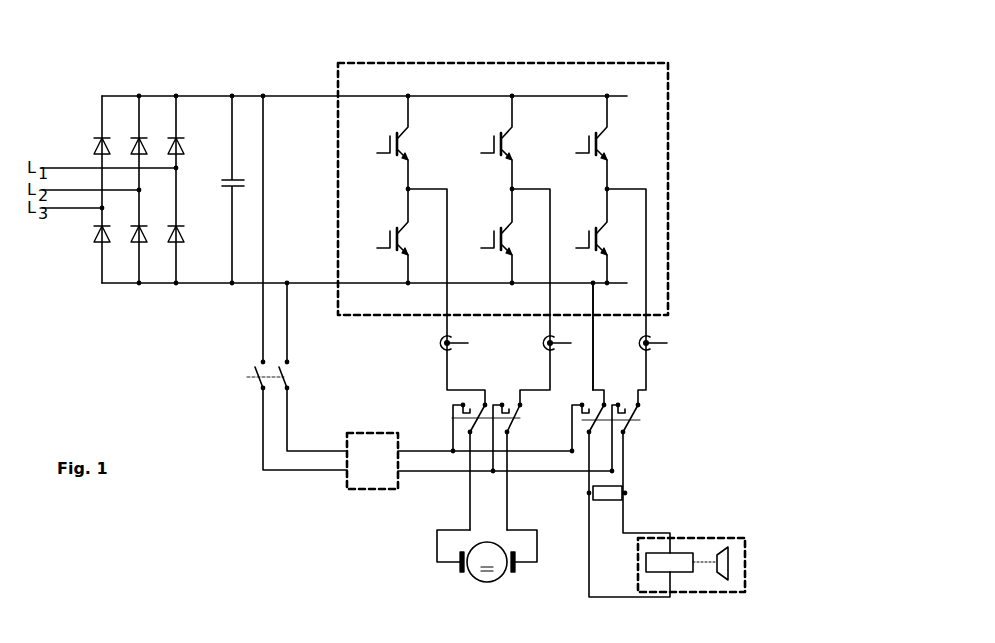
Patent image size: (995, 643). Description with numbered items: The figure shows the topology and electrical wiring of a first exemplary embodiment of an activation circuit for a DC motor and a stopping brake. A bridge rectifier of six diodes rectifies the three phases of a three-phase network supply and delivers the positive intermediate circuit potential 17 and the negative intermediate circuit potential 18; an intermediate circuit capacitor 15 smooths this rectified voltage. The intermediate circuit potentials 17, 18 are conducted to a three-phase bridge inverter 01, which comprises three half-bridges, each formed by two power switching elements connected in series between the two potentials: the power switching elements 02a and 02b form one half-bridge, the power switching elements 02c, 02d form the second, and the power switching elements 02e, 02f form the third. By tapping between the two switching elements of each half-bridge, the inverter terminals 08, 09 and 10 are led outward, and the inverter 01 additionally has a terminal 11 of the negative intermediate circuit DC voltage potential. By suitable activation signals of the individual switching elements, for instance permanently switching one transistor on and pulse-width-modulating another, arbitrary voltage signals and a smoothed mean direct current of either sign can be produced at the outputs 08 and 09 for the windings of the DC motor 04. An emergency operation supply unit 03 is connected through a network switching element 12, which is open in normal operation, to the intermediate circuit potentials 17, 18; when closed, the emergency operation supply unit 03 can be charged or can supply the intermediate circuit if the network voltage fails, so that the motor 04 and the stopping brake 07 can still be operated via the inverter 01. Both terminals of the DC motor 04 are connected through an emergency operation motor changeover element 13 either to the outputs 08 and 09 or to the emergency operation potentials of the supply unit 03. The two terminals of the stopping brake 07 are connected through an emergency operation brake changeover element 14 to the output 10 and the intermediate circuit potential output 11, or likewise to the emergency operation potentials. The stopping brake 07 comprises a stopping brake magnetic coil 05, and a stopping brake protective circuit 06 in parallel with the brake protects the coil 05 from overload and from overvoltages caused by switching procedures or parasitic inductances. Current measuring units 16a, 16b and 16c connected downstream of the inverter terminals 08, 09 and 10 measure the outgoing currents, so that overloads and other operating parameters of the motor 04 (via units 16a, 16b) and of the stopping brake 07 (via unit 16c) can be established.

The three-phase bridge inverter 01 is at (603, 62).
The power switching element 02a is at (380, 142).
The power switching element 02b is at (380, 236).
The power switching element 02c is at (486, 142).
The power switching element 02d is at (486, 236).
The power switching element 02e is at (581, 142).
The power switching element 02f is at (581, 236).
The emergency operation supply unit 03 is at (352, 489).
The DC motor 04 is at (465, 572).
The stopping brake magnetic coil 05 is at (680, 573).
The stopping brake protective circuit 06 is at (623, 484).
The stopping brake 07 is at (683, 537).
The inverter terminal 08 is at (443, 318).
The inverter terminal 09 is at (547, 318).
The inverter terminal 10 is at (657, 318).
The terminal of the DC voltage potential UZK− 11 is at (595, 317).
The network switching element 12 is at (247, 377).
The emergency operation motor changeover element 13 is at (452, 418).
The emergency operation brake changeover element 14 is at (640, 415).
The intermediate circuit capacitor 15 is at (232, 176).
The current measuring unit 16a is at (455, 346).
The current measuring unit 16b is at (556, 347).
The current measuring unit 16c is at (655, 349).
The intermediate circuit potential UZK+ 17 is at (163, 96).
The intermediate circuit potential UZK− 18 is at (153, 283).